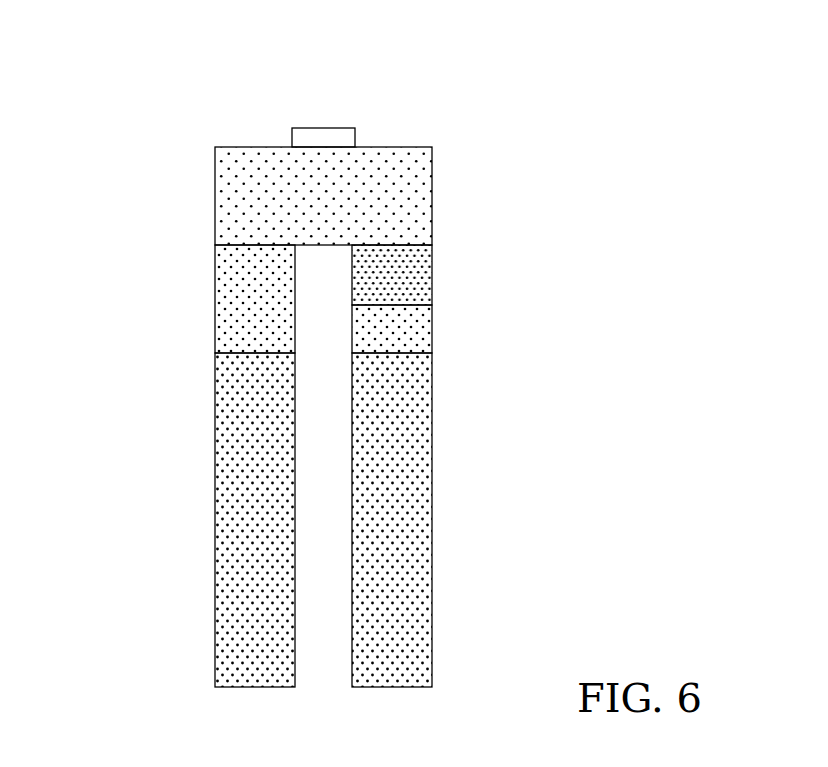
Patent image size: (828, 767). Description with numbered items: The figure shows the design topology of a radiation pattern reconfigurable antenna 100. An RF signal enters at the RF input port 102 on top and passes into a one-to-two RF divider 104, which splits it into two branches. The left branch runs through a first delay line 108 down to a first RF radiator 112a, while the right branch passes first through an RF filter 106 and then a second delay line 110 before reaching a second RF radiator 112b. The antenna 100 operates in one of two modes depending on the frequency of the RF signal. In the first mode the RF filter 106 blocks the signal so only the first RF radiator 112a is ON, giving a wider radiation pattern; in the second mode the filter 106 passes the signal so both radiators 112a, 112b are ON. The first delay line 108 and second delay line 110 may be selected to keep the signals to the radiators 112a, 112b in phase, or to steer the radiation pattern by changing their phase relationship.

The reconfigurable antenna 100 is at (146, 78).
The RF input port 102 is at (315, 128).
The one-to-two RF divider 104 is at (367, 158).
The RF filter 106 is at (413, 280).
The first delay line 108 is at (232, 302).
The second delay line 110 is at (423, 335).
The first RF radiator 112a is at (230, 442).
The second RF radiator 112b is at (418, 447).